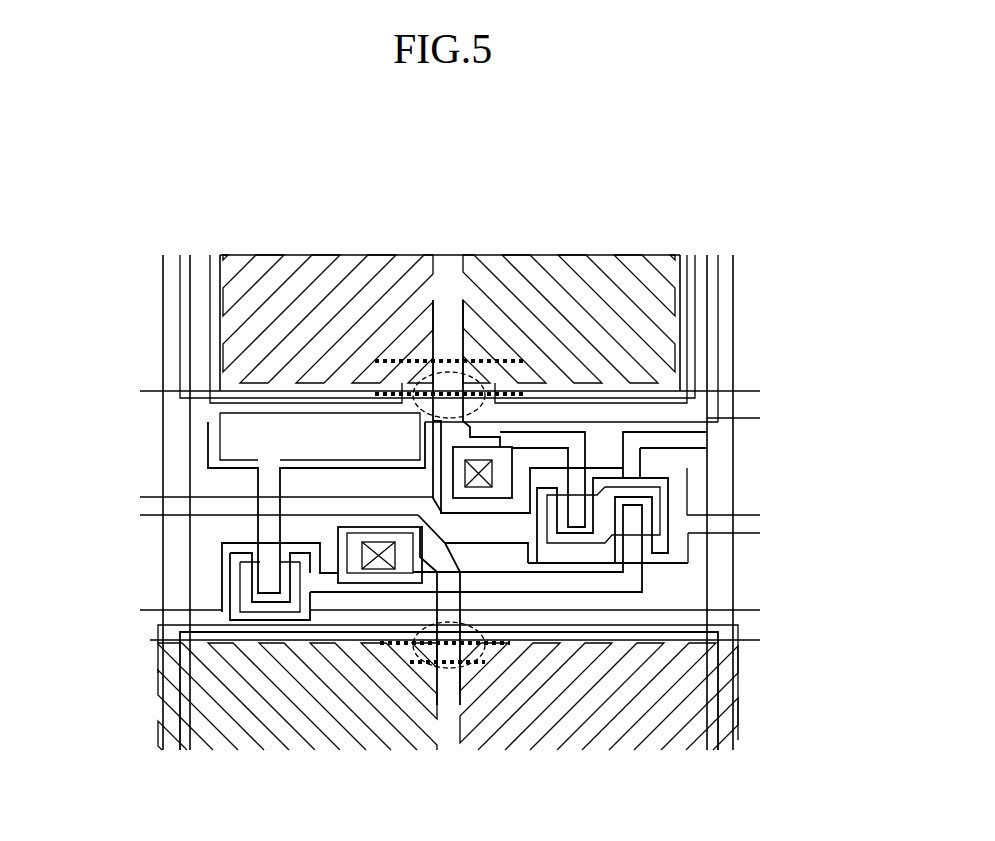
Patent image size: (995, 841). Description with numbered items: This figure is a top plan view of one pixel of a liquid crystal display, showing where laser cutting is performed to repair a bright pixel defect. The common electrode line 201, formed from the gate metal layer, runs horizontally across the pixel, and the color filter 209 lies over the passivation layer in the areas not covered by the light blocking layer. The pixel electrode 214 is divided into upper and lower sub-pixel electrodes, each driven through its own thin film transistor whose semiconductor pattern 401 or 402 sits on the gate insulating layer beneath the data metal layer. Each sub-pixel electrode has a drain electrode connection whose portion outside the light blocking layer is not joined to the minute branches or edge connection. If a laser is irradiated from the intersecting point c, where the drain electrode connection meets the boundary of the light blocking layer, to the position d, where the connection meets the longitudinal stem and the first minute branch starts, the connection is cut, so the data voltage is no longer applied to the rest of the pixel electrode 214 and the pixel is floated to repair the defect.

The common electrode line 201 is at (645, 391).
The color filter 209 is at (582, 398).
The electrode 214 is at (373, 332).
The semiconductor pattern 401 is at (647, 484).
The semiconductor pattern 402 is at (240, 582).
The intersecting point c is at (503, 395).
The position d is at (409, 358).